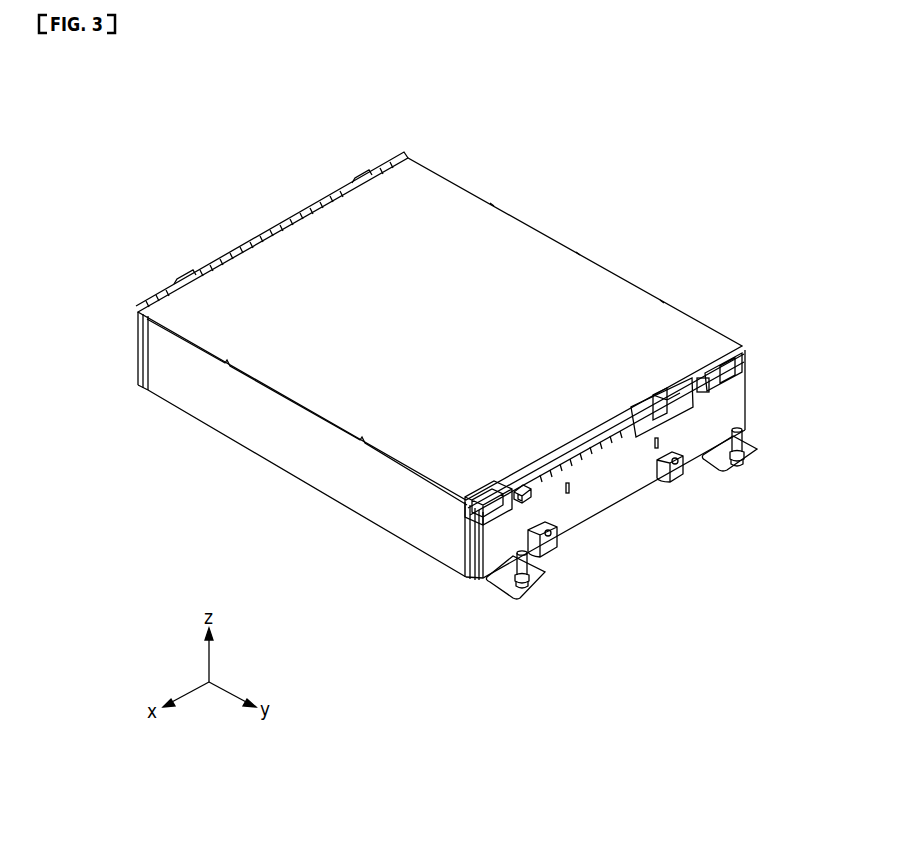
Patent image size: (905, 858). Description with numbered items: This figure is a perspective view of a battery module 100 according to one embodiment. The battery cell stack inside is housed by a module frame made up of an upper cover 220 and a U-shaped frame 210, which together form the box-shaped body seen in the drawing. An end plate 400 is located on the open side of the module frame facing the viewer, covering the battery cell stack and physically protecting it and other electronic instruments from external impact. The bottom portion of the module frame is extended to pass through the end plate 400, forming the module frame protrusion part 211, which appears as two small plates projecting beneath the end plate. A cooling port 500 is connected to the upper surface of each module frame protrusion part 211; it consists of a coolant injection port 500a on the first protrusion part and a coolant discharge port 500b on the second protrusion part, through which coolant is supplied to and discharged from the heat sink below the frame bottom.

The battery module 100 is at (524, 84).
The U-shaped frame 210 is at (300, 455).
The module frame protrusion part 211 is at (546, 576).
The upper cover 220 is at (592, 298).
The end plate 400 is at (600, 490).
The cooling port 500 is at (777, 203).
The coolant injection port 500a is at (745, 436).
The coolant discharge port 500b is at (468, 612).